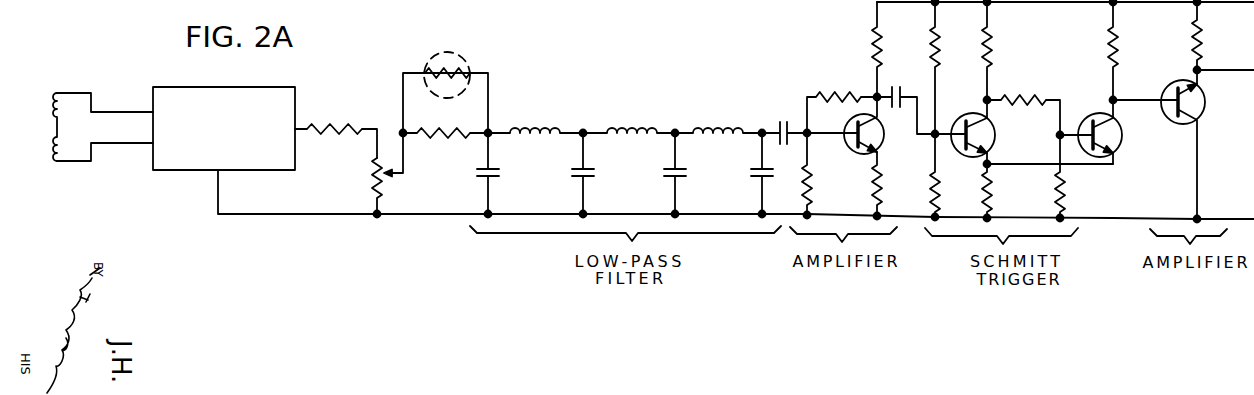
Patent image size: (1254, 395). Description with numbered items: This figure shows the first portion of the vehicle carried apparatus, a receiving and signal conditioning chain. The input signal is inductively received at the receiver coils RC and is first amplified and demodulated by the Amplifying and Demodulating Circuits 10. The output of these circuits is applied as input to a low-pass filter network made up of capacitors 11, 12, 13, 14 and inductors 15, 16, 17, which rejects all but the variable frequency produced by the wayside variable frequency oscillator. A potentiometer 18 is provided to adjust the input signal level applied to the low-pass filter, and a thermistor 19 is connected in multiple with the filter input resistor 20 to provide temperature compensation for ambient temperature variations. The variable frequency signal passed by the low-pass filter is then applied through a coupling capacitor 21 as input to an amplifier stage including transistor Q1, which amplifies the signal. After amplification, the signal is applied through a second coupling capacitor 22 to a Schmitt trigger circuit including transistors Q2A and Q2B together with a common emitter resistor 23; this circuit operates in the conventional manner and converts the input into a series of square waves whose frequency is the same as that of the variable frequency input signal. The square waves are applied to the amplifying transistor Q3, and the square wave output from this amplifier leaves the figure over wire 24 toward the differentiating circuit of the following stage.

The Amplifying and Demodulating Circuits 10 is at (283, 87).
The capacitor 11 is at (499, 180).
The capacitor 12 is at (593, 180).
The capacitor 13 is at (686, 180).
The capacitor 14 is at (772, 180).
The inductor 15 is at (540, 127).
The inductor 16 is at (641, 127).
The inductor 17 is at (719, 127).
The potentiometer 18 is at (385, 181).
The thermistor 19 is at (440, 53).
The filter input resistor 20 is at (444, 145).
The coupling capacitor 21 is at (781, 121).
The coupling capacitor 22 is at (899, 87).
The common emitter resistor 23 is at (993, 190).
The wire 24 is at (1220, 70).
The transistor Q1 is at (884, 142).
The transistor Q2A is at (996, 128).
The transistor Q2B is at (1122, 131).
The amplifying transistor Q3 is at (1200, 112).
The receiver coils RC is at (97, 112).